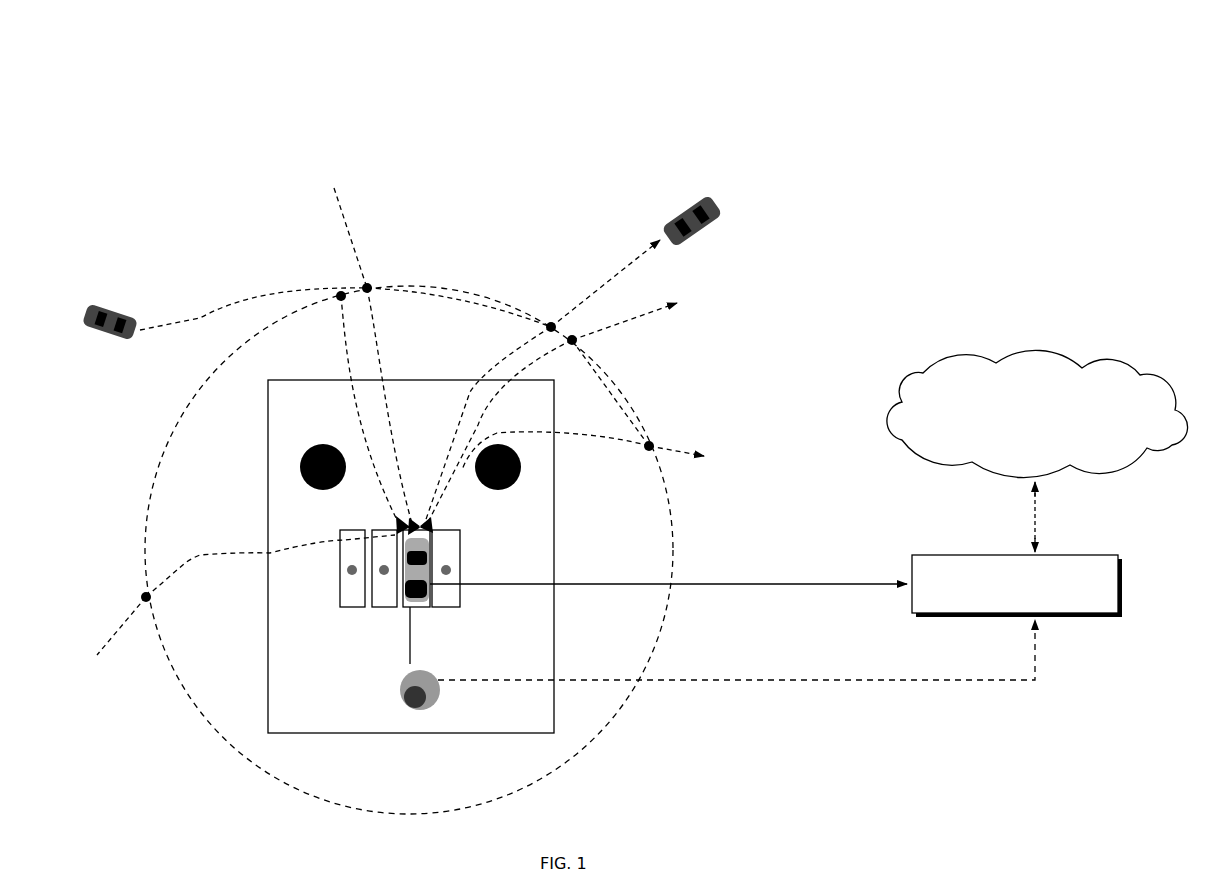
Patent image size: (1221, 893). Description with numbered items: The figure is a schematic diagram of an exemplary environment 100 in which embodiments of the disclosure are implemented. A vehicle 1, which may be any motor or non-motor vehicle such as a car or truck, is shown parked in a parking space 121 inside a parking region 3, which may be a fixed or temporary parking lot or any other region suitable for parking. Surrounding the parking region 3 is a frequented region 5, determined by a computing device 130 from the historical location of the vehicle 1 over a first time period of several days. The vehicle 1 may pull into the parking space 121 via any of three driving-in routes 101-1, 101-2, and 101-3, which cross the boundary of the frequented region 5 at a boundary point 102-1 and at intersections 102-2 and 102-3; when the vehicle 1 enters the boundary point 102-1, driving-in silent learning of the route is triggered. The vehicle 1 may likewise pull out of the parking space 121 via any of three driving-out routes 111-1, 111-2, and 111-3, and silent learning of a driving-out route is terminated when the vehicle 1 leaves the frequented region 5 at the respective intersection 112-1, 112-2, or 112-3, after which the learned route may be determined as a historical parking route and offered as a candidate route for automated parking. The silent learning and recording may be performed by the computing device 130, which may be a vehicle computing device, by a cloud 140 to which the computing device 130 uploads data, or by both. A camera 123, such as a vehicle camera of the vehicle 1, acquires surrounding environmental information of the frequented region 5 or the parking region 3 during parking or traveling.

The exemplary environment 100 is at (341, 86).
The vehicle 1 is at (420, 555).
The parking region 3 is at (554, 706).
The frequented region 5 is at (545, 780).
The driving-in route 101-1 is at (342, 203).
The driving-in route 101-2 is at (200, 318).
The driving-in route 101-3 is at (190, 560).
The boundary point 102-1 is at (367, 288).
The intersection 102-2 is at (340, 297).
The intersection 102-3 is at (146, 597).
The driving-out route 111-1 is at (581, 300).
The driving-out route 111-2 is at (643, 312).
The driving-out route 111-3 is at (675, 455).
The intersection 112-1 is at (551, 327).
The intersection 112-2 is at (572, 340).
The intersection 112-3 is at (649, 446).
The parking space 121 is at (408, 603).
The camera 123 is at (435, 700).
The computing device 130 is at (1080, 553).
The cloud 140 is at (1131, 359).